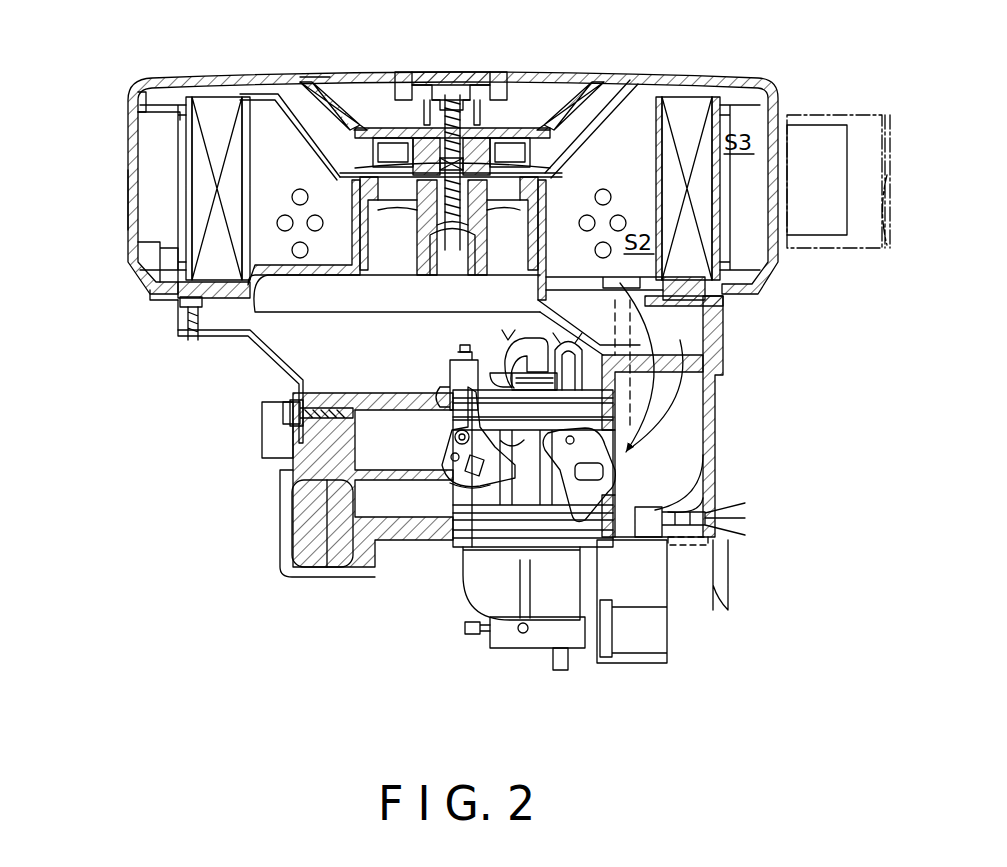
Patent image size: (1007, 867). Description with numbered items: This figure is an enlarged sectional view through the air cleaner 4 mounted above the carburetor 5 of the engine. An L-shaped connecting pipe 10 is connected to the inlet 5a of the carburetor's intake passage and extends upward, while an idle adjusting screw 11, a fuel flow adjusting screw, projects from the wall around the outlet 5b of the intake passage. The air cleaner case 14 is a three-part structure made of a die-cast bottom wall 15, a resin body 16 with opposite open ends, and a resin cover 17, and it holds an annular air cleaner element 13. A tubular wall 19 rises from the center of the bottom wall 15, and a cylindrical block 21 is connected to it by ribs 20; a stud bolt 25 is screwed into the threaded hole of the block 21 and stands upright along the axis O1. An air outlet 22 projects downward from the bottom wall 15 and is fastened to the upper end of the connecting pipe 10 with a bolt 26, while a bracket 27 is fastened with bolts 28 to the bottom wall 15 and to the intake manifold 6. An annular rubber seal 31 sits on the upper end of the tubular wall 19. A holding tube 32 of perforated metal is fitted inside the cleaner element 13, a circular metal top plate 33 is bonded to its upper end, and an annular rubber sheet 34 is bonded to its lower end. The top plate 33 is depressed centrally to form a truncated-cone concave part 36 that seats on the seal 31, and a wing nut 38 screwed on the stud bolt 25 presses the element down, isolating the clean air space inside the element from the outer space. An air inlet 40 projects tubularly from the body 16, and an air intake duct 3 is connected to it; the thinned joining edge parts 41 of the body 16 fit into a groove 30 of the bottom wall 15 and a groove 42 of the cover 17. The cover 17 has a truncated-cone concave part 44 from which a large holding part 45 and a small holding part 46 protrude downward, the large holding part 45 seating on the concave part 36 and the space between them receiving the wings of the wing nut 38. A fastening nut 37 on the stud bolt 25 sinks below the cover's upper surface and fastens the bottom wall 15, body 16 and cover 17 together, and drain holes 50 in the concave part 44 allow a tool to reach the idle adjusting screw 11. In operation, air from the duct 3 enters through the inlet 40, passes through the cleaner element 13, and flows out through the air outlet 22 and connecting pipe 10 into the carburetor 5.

The air intake duct 3 is at (832, 248).
The air cleaner 4 is at (132, 74).
The carburetor 5 is at (502, 543).
The inlet of the intake passage 5a is at (612, 488).
The outlet of the intake passage 5b is at (457, 493).
The intake manifold 6 is at (347, 576).
The connecting pipe 10 is at (702, 488).
The idle adjusting screw 11 is at (458, 350).
The air cleaner element 13 is at (162, 158).
The air cleaner case 14 is at (127, 163).
The bottom wall 15 is at (152, 316).
The body 16 is at (128, 203).
The cover 17 is at (272, 77).
The tubular wall 19 is at (542, 263).
The ribs 20 is at (412, 298).
The cylindrical block 21 is at (397, 193).
The air outlet 22 is at (707, 380).
The stud bolt 25 is at (454, 238).
The bolt 26 is at (640, 345).
The bracket 27 is at (264, 350).
The bolt 28 is at (194, 338).
The groove 30 is at (142, 274).
The annular rubber seal 31 is at (552, 198).
The holding tube 32 is at (664, 138).
The top plate 33 is at (230, 95).
The annular rubber sheet 34 is at (267, 303).
The concave part 36 is at (624, 86).
The fastening nut 37 is at (420, 72).
The wing nut 38 is at (347, 174).
The air inlet 40 is at (817, 118).
The joining edge parts 41 is at (138, 118).
The groove 42 is at (136, 98).
The concave part 44 is at (566, 126).
The large holding part 45 is at (344, 160).
The small holding part 46 is at (514, 128).
The drain holes 50 is at (390, 130).
The axis of the stud bolt O1 is at (470, 234).